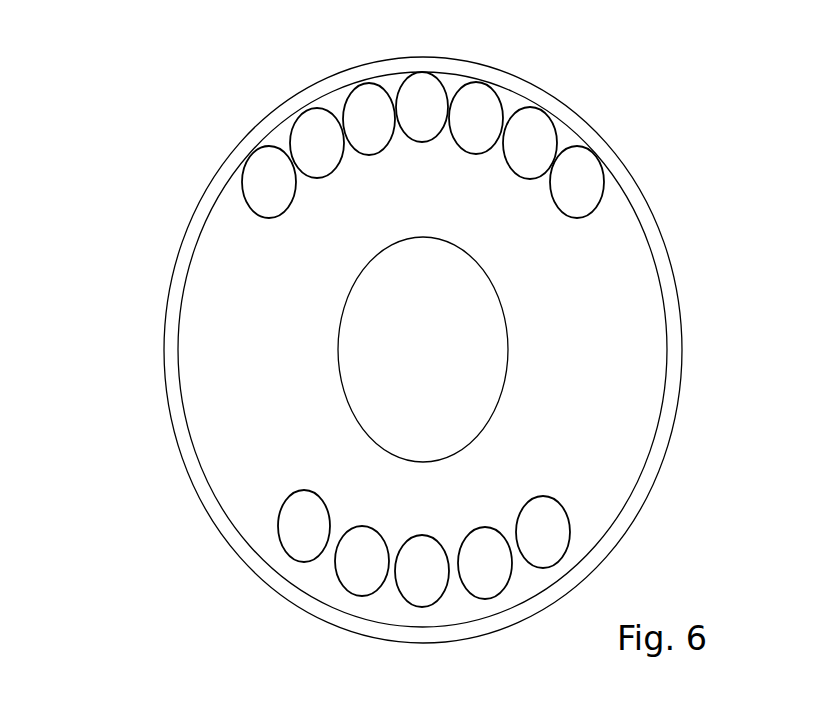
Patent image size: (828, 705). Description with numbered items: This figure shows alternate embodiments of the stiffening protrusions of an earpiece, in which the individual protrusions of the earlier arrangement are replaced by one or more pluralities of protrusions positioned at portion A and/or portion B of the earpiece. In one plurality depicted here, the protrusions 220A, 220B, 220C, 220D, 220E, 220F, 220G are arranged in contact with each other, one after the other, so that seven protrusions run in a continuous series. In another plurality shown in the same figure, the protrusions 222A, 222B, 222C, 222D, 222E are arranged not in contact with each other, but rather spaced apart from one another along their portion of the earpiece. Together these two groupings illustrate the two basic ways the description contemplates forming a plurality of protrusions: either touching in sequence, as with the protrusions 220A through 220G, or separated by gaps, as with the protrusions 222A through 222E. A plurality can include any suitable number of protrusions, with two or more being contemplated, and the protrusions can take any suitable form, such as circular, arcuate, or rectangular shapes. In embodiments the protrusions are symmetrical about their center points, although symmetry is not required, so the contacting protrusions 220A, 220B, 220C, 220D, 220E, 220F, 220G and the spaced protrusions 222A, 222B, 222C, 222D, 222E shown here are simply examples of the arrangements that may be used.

The protrusion 220A is at (243, 167).
The protrusion 220B is at (295, 117).
The protrusion 220C is at (363, 83).
The protrusion 220D is at (448, 86).
The protrusion 220E is at (502, 102).
The protrusion 220F is at (555, 130).
The protrusion 220G is at (605, 172).
The protrusion 222A is at (283, 500).
The protrusion 222B is at (343, 588).
The protrusion 222C is at (418, 608).
The protrusion 222D is at (507, 587).
The protrusion 222E is at (555, 498).